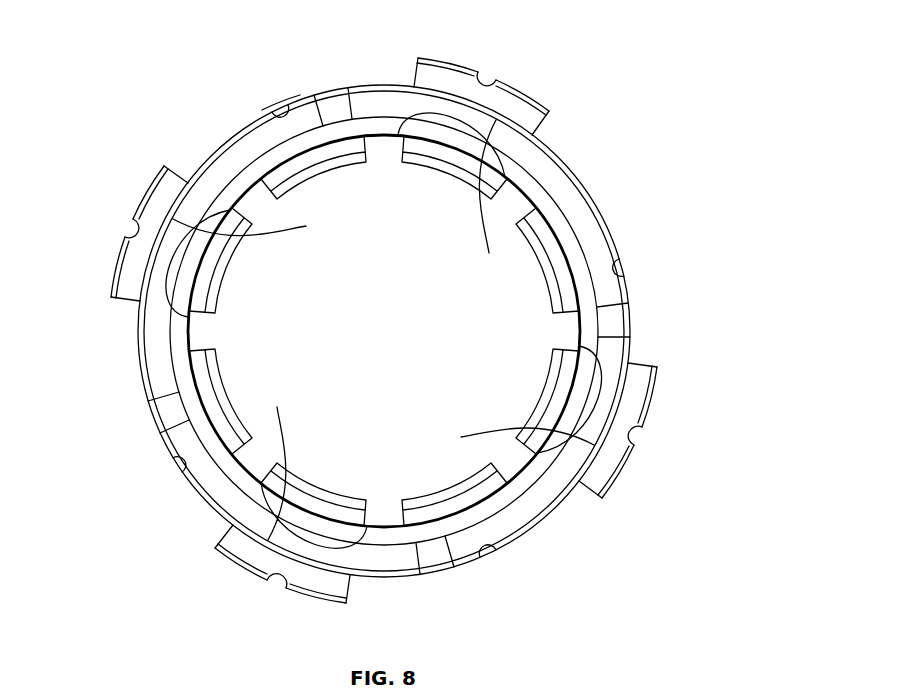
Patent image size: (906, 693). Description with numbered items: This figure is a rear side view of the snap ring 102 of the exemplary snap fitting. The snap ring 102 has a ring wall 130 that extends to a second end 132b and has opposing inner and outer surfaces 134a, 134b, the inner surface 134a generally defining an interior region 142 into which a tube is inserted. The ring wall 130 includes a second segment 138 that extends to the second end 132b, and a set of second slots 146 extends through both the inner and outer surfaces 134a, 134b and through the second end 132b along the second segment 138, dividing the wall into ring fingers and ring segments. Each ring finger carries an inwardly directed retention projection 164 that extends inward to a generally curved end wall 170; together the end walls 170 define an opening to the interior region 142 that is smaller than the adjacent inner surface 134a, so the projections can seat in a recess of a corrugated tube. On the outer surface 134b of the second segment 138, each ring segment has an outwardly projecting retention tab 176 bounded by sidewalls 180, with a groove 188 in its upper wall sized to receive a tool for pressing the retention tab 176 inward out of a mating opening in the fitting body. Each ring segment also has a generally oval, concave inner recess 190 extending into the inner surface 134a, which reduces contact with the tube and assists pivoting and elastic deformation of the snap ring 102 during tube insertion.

The snap ring 102 is at (643, 102).
The ring wall 130 is at (533, 513).
The second end 132b is at (207, 502).
The inner surface 134a is at (398, 545).
The outer surface 134b is at (227, 140).
The second segment 138 is at (582, 180).
The interior region 142 is at (420, 342).
The second slots 146 is at (327, 128).
The retention projection 164 is at (520, 227).
The end wall 170 is at (218, 378).
The retention tab 176 is at (540, 100).
The sidewalls 180 is at (525, 117).
The groove 188 is at (488, 78).
The inner recess 190 is at (470, 137).